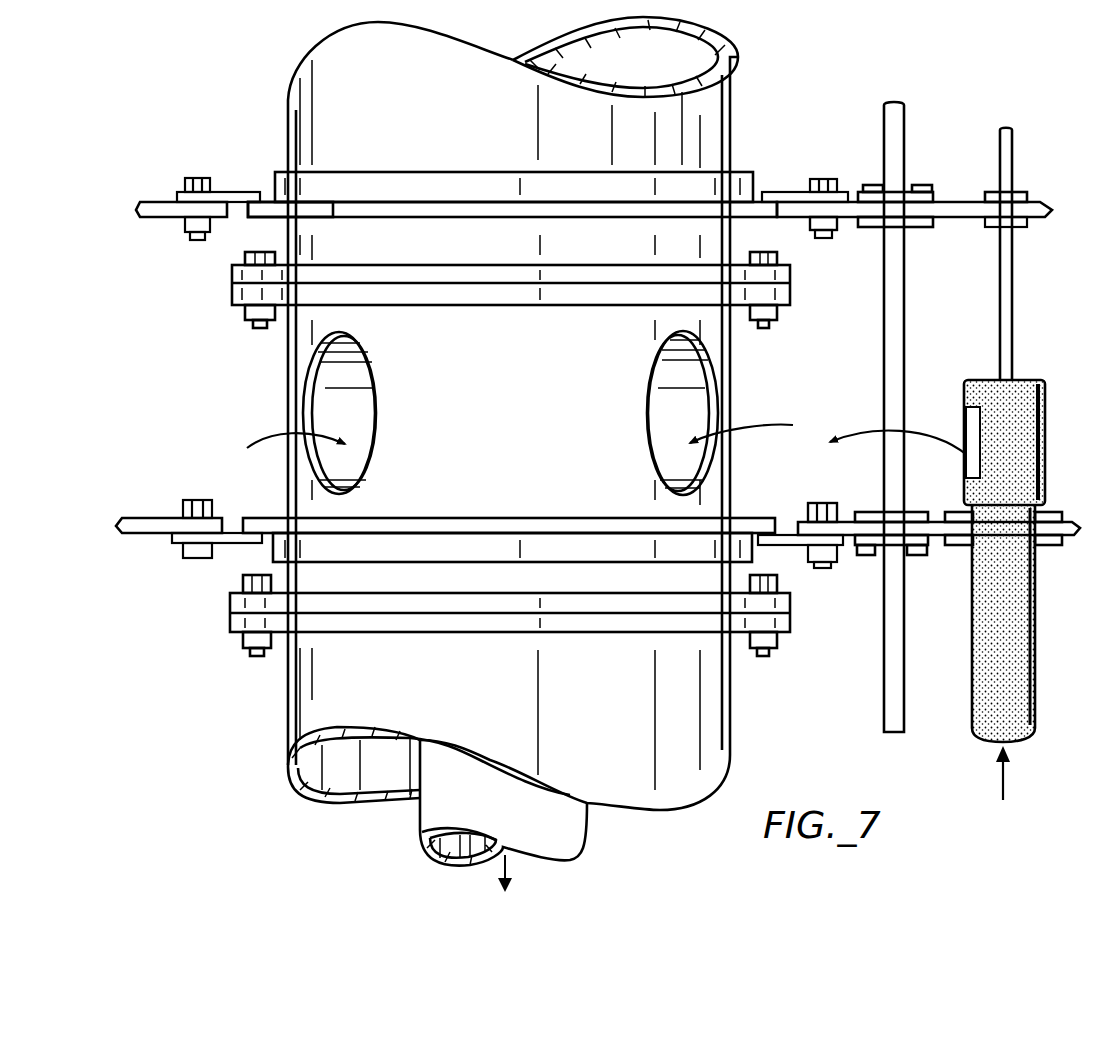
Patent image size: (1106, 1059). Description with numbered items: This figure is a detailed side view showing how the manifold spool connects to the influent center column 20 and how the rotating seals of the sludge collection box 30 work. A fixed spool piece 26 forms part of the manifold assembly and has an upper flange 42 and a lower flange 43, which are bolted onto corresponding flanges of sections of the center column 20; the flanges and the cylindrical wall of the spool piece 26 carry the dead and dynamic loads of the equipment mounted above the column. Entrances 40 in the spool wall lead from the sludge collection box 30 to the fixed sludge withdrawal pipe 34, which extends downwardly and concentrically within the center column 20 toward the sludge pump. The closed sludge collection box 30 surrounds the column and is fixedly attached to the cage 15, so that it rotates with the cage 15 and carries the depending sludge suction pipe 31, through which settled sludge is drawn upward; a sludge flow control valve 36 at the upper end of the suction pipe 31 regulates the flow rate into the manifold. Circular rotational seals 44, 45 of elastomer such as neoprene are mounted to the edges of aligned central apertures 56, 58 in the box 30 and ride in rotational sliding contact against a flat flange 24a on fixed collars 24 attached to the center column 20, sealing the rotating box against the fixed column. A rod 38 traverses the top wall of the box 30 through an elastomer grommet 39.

The cage 15 is at (906, 290).
The center column 20 is at (732, 720).
The collar 24 is at (748, 172).
The flat flange 24a is at (270, 200).
The spool piece 26 is at (288, 332).
The sludge collection box 30 is at (158, 218).
The sludge suction pipe 31 is at (967, 672).
The sludge withdrawal pipe 34 is at (590, 812).
The sludge flow control valve 36 is at (990, 378).
The rod 38 is at (1000, 283).
The grommet 39 is at (995, 228).
The entrance 40 is at (332, 393).
The upper flange 42 is at (232, 290).
The lower flange 43 is at (230, 603).
The rotational seal 44 is at (249, 192).
The rotational seal 45 is at (228, 543).
The central aperture 56 is at (797, 212).
The central aperture 58 is at (787, 533).